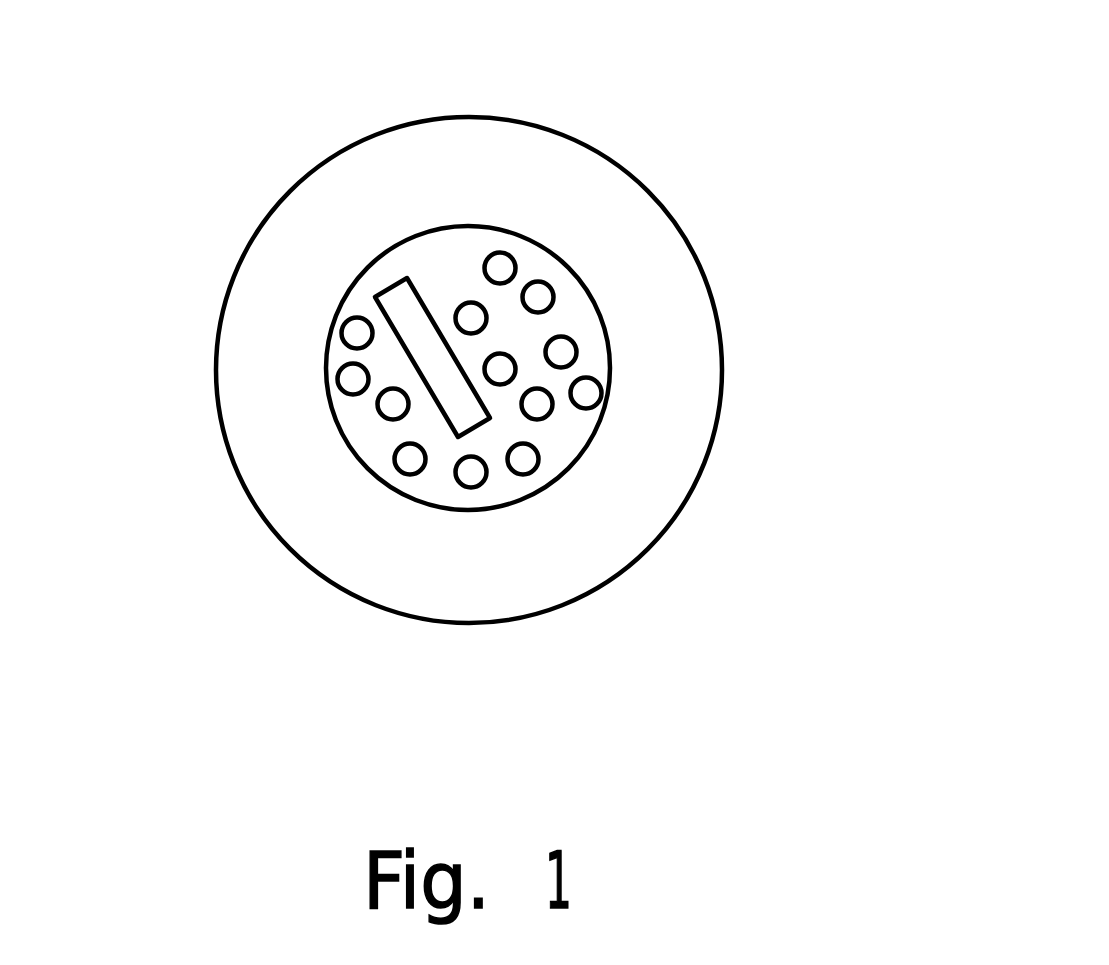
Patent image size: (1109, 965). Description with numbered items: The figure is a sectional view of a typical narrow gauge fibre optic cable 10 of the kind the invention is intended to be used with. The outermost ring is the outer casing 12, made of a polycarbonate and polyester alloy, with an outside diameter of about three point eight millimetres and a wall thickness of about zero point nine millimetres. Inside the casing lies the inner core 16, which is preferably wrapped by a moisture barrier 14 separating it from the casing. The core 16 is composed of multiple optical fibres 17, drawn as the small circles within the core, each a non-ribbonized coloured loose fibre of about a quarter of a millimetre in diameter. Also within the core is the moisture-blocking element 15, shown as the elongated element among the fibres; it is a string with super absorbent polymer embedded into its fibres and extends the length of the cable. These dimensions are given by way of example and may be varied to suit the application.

The fibre optic cable 10 is at (509, 360).
The outer casing 12 is at (614, 339).
The moisture barrier 14 is at (589, 386).
The moisture-blocking element 15 is at (291, 265).
The inner core 16 is at (329, 432).
The optical fibres 17 is at (299, 583).